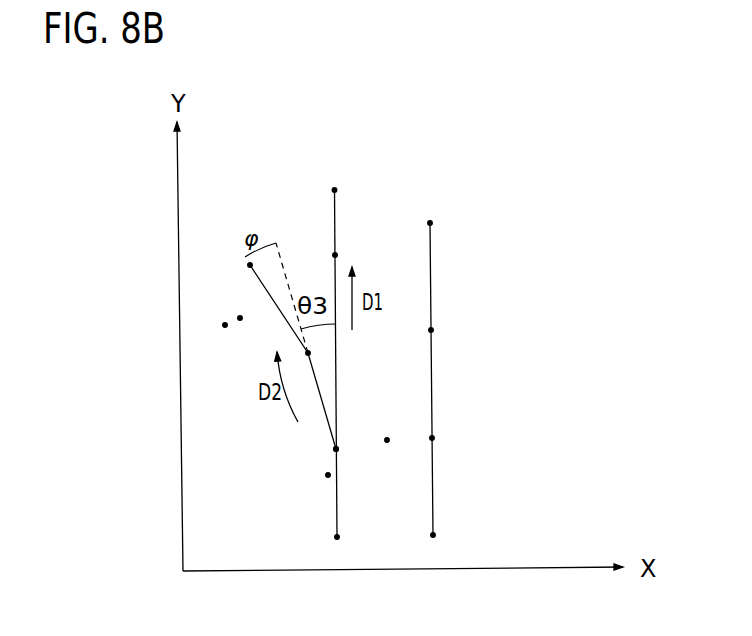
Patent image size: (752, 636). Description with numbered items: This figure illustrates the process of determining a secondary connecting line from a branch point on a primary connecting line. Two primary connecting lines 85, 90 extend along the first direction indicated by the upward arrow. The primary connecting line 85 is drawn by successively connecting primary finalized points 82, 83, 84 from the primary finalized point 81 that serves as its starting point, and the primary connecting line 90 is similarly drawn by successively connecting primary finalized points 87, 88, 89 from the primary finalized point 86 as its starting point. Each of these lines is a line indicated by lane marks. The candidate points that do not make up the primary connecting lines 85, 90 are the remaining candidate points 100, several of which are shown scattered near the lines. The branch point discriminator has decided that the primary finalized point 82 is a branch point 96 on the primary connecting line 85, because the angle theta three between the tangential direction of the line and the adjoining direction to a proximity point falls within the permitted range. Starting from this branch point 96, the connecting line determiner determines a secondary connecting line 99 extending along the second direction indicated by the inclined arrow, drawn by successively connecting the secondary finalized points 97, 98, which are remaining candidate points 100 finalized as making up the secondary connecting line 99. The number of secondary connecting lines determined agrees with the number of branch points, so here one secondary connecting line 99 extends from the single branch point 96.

The primary finalized point 81 is at (337, 537).
The primary finalized point 82 is at (338, 449).
The primary finalized point 83 is at (335, 255).
The primary finalized point 84 is at (334, 190).
The primary connecting line 85 is at (333, 221).
The primary finalized point 86 is at (433, 535).
The primary finalized point 87 is at (432, 438).
The primary finalized point 88 is at (431, 330).
The primary finalized point 89 is at (430, 223).
The primary connecting line 90 is at (437, 388).
The branch point 96 is at (363, 426).
The secondary finalized point 97 is at (308, 353).
The secondary finalized point 98 is at (249, 265).
The secondary connecting line 99 is at (264, 290).
The remaining candidate points 100 is at (240, 318).